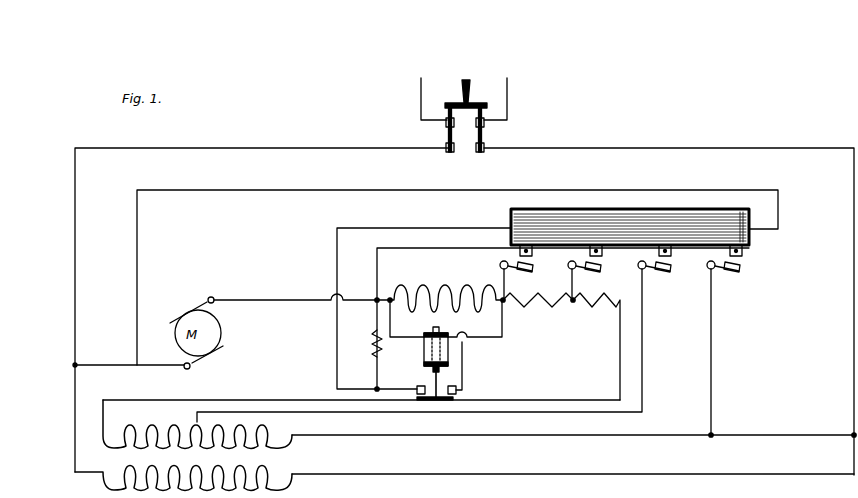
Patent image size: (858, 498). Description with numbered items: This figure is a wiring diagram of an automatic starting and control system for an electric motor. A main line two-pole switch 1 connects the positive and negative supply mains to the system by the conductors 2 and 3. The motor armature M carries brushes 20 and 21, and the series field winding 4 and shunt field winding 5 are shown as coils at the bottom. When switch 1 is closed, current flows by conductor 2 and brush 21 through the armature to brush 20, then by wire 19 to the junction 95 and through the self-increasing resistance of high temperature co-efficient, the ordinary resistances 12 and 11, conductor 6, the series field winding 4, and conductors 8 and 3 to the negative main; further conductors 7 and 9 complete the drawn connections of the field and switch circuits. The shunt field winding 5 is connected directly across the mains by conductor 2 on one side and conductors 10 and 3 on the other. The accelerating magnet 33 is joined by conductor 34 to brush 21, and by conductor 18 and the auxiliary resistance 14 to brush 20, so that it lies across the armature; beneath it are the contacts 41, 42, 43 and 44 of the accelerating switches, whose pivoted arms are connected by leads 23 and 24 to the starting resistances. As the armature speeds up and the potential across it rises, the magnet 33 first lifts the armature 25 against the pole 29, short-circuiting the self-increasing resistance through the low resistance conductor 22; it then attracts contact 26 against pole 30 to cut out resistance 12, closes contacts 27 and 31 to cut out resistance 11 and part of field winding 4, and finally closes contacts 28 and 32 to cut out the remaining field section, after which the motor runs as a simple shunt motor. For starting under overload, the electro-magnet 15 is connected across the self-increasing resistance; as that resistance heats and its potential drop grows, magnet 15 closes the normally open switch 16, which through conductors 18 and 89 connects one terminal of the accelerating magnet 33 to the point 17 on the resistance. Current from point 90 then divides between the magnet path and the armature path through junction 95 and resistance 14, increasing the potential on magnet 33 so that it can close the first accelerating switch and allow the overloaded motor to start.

The main line two-pole switch 1 is at (467, 138).
The conductor 2 is at (327, 148).
The conductor 3 is at (633, 148).
The series field winding 4 is at (177, 420).
The shunt field winding 5 is at (125, 464).
The conductor 6 is at (574, 400).
The conductor 7 is at (643, 398).
The conductor 8 is at (760, 435).
The conductor 9 is at (711, 372).
The conductor 10 is at (630, 475).
The resistance 11 is at (596, 306).
The resistance 12 is at (547, 308).
The auxiliary resistance 14 is at (372, 343).
The electro-magnet 15 is at (448, 352).
The switch 16 is at (437, 388).
The point on the resistance 17 is at (462, 295).
The conductor 18 is at (455, 222).
The wire 19 is at (268, 298).
The brush 20 is at (210, 297).
The brush 21 is at (202, 362).
The low resistance conductor 22 is at (377, 258).
The conductor 23 is at (508, 298).
The conductor 24 is at (568, 299).
The armature 25 is at (535, 267).
The contact 26 is at (600, 272).
The contact 27 is at (670, 273).
The contact 28 is at (740, 270).
The pole 29 is at (510, 258).
The pole 30 is at (580, 258).
The contact 31 is at (650, 258).
The contact 32 is at (747, 253).
The accelerating magnet 33 is at (628, 211).
The conductor 34 is at (248, 190).
The contact 41 is at (533, 254).
The contact 42 is at (603, 254).
The contact 43 is at (673, 254).
The contact 44 is at (744, 254).
The conductor 89 is at (462, 365).
The point 90 is at (134, 362).
The junction 95 is at (377, 298).